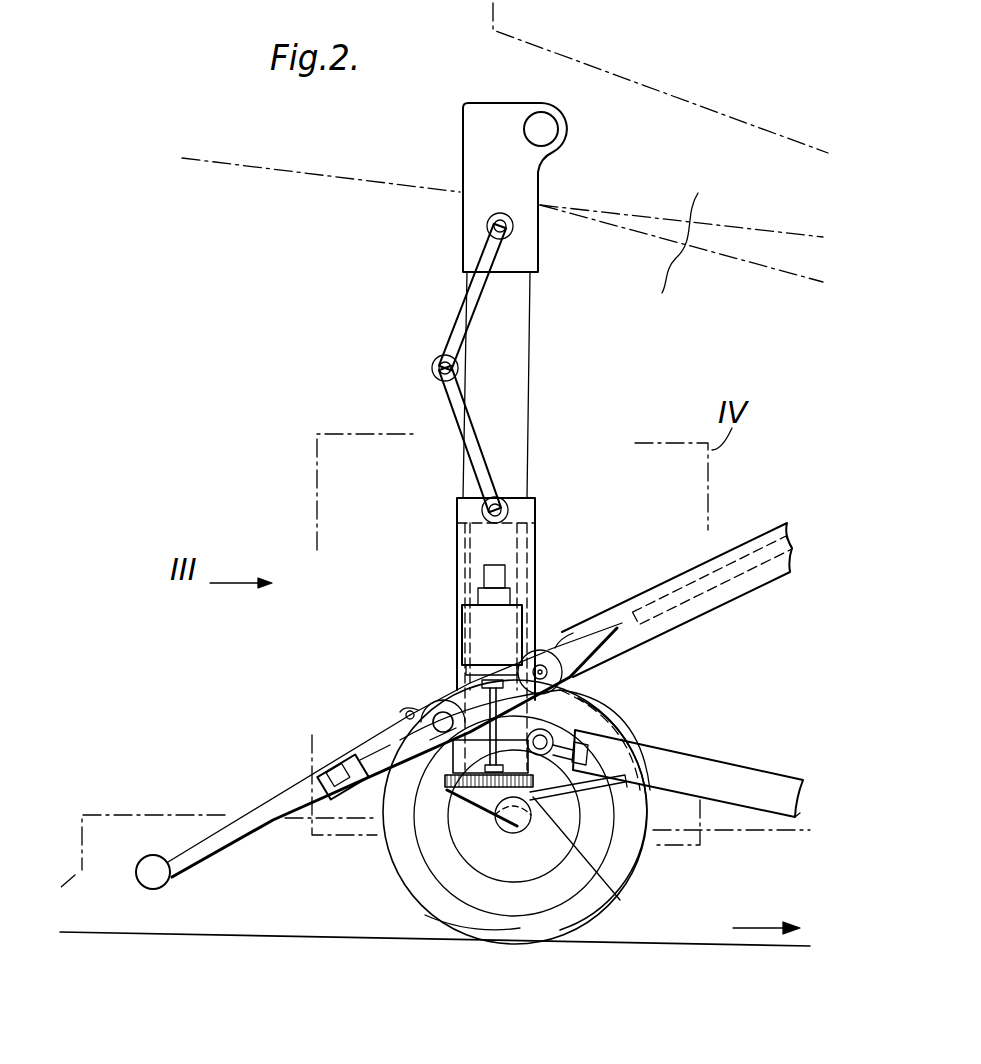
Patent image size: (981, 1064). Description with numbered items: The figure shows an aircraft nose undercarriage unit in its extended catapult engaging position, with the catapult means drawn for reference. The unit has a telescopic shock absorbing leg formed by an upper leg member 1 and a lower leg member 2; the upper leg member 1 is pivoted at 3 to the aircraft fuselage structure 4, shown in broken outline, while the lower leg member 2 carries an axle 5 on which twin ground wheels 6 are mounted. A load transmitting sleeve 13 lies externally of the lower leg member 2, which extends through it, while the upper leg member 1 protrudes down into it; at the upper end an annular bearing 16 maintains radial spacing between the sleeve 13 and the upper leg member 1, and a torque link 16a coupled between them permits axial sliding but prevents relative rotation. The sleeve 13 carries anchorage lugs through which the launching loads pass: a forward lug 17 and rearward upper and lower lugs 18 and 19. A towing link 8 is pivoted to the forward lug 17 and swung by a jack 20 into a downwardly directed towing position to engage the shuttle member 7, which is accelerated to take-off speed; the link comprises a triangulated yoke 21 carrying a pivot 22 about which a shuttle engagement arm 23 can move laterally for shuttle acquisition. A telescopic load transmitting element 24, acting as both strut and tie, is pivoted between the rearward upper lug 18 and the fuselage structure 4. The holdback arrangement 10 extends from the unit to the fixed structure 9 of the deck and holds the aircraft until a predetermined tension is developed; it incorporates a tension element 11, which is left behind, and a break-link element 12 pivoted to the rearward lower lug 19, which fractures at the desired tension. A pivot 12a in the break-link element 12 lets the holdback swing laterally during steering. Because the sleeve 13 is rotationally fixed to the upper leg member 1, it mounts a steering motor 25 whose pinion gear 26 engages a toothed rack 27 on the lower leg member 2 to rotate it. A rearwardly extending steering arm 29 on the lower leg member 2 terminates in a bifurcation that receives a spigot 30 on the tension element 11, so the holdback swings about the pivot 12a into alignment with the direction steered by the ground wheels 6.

The upper leg member 1 is at (520, 305).
The lower leg member 2 is at (445, 788).
The pivot 3 is at (545, 130).
The aircraft fuselage structure 4 is at (505, 154).
The axle 5 is at (590, 915).
The ground wheels 6 is at (600, 940).
The shuttle member 7 is at (118, 815).
The towing link 8 is at (265, 798).
The fixed structure 9 is at (766, 915).
The holdback arrangement 10 is at (767, 765).
The tension element 11 is at (777, 800).
The break-link element 12 is at (590, 724).
The pivot 12a is at (580, 697).
The load transmitting sleeve 13 is at (537, 550).
The annular bearing 16 is at (535, 500).
The torque link 16a is at (457, 328).
The forward lug 17 is at (440, 700).
The rearward upper lug 18 is at (540, 655).
The rearward lower lug 19 is at (600, 893).
The jack 20 is at (430, 715).
The triangulated yoke 21 is at (380, 742).
The pivot 22 is at (340, 765).
The shuttle engagement arm 23 is at (220, 835).
The load transmitting element 24 is at (757, 528).
The steering motor 25 is at (480, 625).
The pinion gear 26 is at (500, 850).
The toothed rack 27 is at (462, 800).
The steering arm 29 is at (615, 858).
The spigot 30 is at (647, 788).